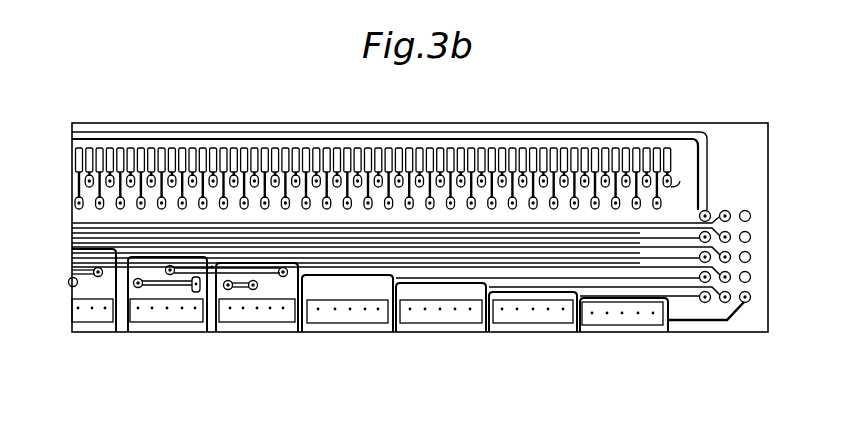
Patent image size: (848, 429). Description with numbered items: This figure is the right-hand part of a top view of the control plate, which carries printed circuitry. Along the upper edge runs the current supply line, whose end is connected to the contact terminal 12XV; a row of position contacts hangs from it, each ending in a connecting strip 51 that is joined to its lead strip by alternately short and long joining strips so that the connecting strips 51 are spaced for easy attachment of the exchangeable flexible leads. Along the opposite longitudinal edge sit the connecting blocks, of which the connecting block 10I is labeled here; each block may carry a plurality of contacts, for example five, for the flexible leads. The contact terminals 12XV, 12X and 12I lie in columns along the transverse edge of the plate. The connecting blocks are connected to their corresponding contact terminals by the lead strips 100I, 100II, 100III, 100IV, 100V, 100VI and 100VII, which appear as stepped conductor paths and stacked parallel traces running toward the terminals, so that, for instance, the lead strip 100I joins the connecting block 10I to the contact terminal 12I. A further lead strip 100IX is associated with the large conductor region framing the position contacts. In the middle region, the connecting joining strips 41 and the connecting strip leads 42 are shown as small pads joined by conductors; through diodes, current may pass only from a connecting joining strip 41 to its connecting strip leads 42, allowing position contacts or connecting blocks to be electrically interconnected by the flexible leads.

The lead strip 100IX is at (92, 226).
The contact terminal 12XV is at (707, 211).
The contact terminal 12X is at (726, 211).
The contact terminal 12I is at (747, 303).
The connecting strip 51 is at (662, 212).
The connecting joining strip 41 is at (88, 270).
The connecting strip lead 42 is at (230, 290).
The lead strip 100VII is at (118, 250).
The lead strip 100VI is at (322, 258).
The lead strip 100V is at (345, 278).
The lead strip 100IV is at (435, 277).
The lead strip 100III is at (515, 287).
The lead strip 100II is at (630, 302).
The lead strip 100I is at (690, 322).
The connecting block 10I is at (593, 320).